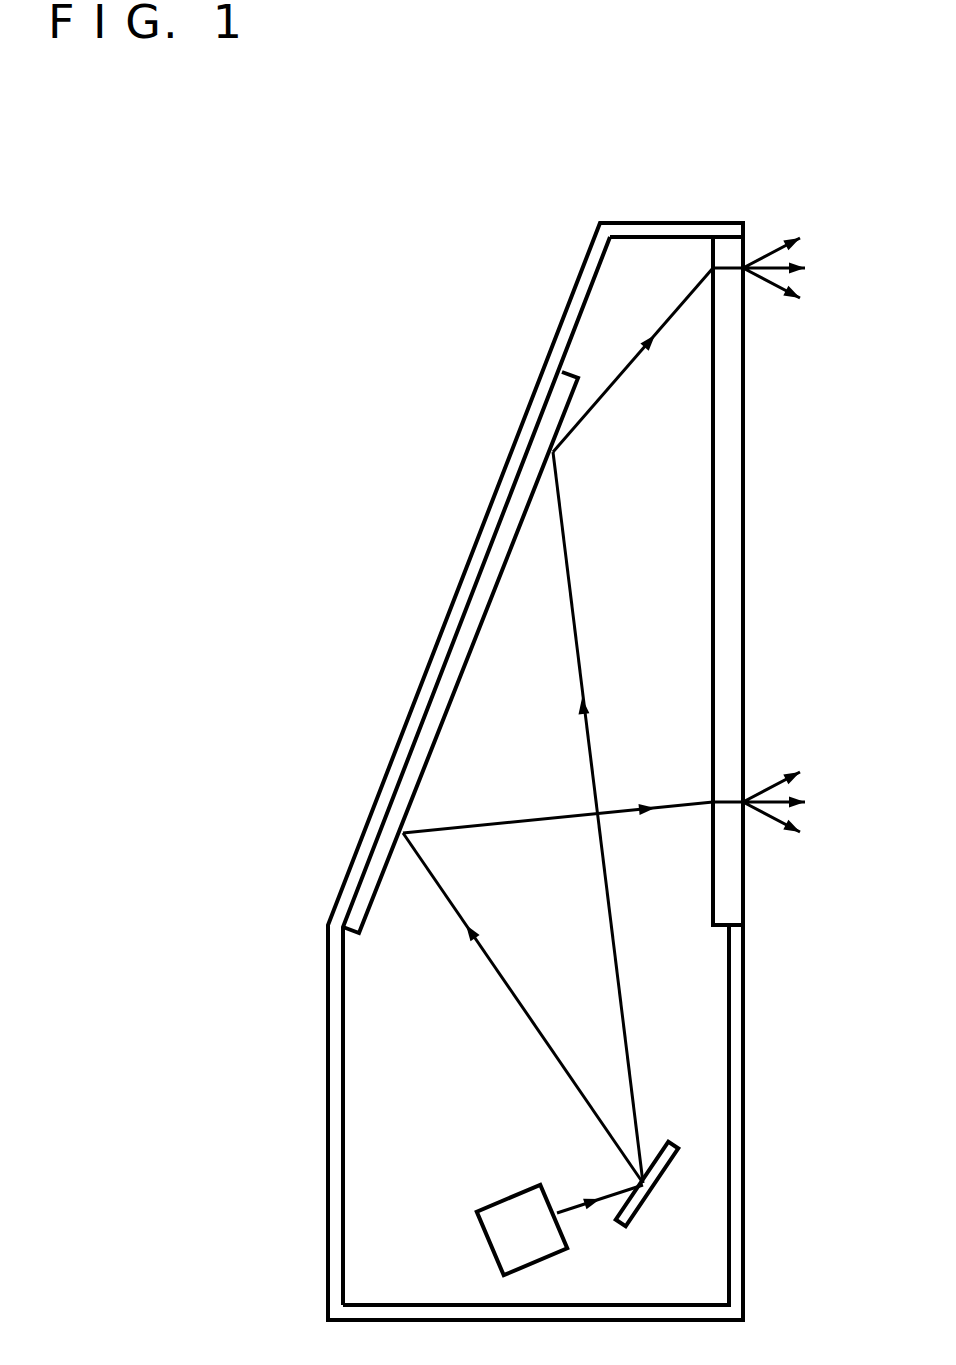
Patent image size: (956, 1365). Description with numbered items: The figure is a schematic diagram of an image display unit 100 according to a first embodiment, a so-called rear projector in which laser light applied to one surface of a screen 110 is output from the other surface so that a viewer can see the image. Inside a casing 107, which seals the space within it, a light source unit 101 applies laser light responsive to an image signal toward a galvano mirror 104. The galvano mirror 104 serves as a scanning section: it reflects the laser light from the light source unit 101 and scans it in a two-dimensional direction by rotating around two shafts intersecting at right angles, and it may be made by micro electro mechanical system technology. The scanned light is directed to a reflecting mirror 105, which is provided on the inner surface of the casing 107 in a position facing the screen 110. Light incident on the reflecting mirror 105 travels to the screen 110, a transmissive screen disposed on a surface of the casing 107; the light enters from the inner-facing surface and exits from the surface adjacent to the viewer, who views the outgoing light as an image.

The image display unit 100 is at (455, 334).
The light source unit 101 is at (497, 1203).
The galvano mirror 104 is at (643, 1218).
The reflecting mirror 105 is at (367, 852).
The casing 107 is at (738, 1124).
The screen 110 is at (735, 493).